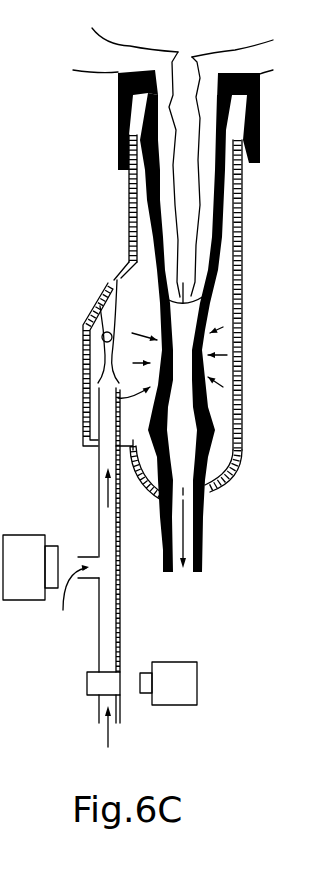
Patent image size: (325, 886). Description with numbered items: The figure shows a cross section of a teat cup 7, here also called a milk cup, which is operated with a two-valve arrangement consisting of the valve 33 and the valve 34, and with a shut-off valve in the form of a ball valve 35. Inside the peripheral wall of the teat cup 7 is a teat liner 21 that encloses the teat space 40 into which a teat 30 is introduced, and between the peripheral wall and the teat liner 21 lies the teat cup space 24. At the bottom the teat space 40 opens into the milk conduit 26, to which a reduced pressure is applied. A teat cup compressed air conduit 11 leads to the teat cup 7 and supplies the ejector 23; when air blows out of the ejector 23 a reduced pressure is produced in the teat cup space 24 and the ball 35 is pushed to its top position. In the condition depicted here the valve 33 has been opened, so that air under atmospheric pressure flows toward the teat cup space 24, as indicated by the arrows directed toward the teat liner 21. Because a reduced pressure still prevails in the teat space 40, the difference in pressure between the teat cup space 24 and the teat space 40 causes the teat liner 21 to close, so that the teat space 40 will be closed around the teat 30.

The teat cup 7 is at (82, 160).
The teat liner 21 is at (250, 125).
The teat 30 is at (198, 254).
The teat cup space 24 is at (228, 294).
The teat space 40 is at (187, 445).
The milk conduit 26 is at (208, 507).
The ejector 23 is at (80, 384).
The ball valve 35 is at (101, 336).
The teat cup compressed air conduit 11 is at (112, 653).
The valve 33 is at (30, 548).
The valve 34 is at (100, 682).